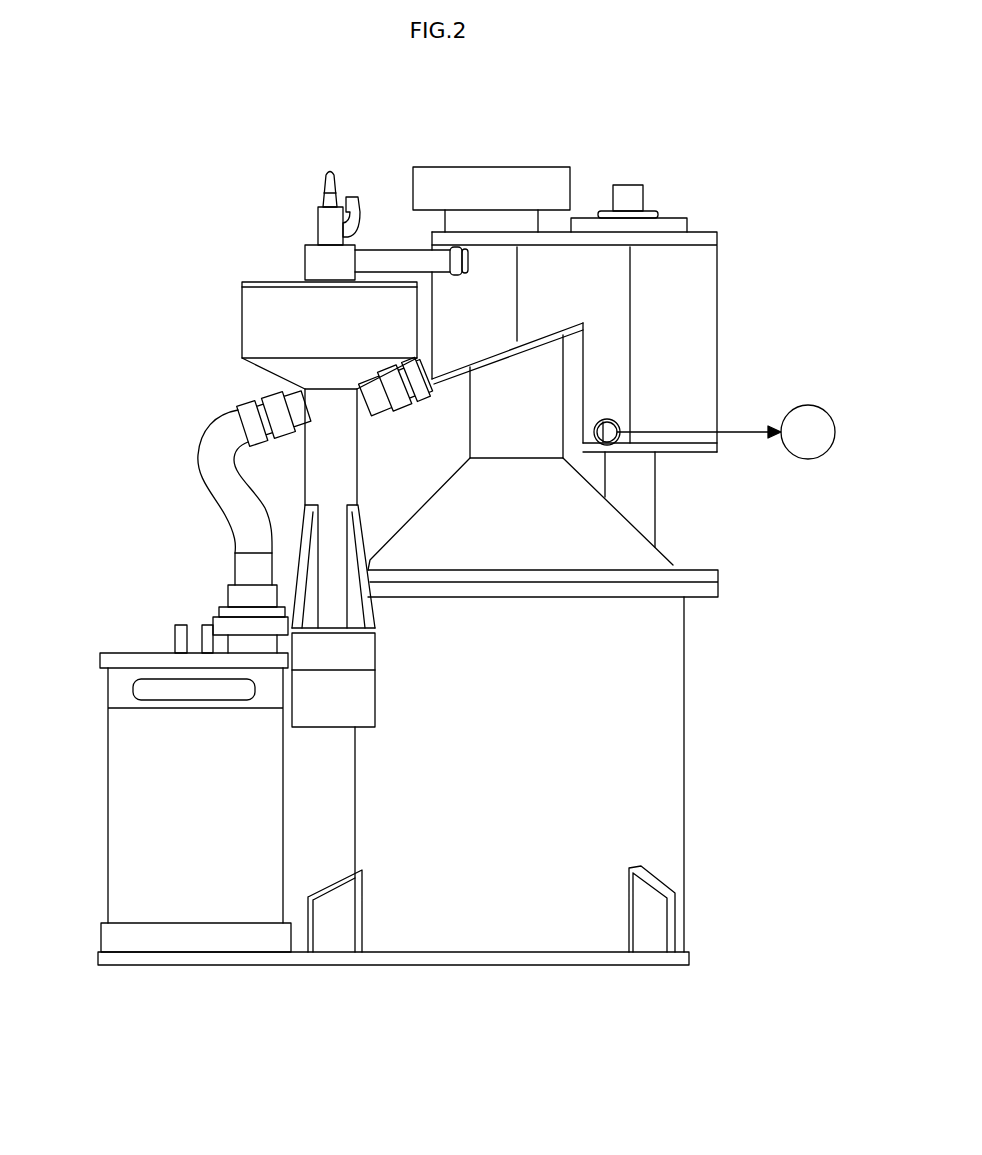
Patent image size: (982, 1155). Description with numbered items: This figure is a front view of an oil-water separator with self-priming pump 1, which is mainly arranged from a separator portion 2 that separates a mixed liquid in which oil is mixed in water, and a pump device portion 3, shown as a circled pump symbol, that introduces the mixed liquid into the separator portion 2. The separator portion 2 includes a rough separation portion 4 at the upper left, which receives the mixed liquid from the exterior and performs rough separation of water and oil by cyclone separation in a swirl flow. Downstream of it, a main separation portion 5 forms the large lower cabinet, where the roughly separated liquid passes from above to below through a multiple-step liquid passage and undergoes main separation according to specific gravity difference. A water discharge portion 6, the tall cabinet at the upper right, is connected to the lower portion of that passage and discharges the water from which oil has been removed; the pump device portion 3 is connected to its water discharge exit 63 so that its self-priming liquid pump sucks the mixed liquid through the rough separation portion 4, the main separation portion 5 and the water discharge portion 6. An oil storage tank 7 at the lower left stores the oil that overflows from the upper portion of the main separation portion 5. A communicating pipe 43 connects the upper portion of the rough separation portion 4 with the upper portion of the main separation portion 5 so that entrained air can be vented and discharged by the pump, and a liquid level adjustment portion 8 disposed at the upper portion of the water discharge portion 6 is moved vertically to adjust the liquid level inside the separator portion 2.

The oil-water separator with self-priming pump 1 is at (770, 110).
The separator portion 2 is at (209, 184).
The pump device portion 3 is at (811, 405).
The rough separation portion 4 is at (262, 319).
The communicating pipe 43 is at (396, 256).
The main separation portion 5 is at (670, 743).
The water discharge portion 6 is at (700, 334).
The water discharge exit 63 is at (620, 422).
The oil storage tank 7 is at (118, 813).
The liquid level adjustment portion 8 is at (636, 193).